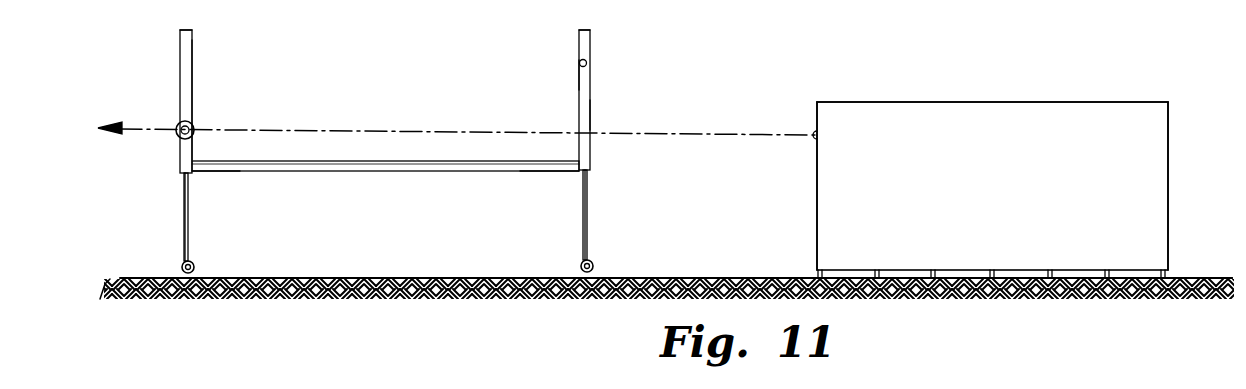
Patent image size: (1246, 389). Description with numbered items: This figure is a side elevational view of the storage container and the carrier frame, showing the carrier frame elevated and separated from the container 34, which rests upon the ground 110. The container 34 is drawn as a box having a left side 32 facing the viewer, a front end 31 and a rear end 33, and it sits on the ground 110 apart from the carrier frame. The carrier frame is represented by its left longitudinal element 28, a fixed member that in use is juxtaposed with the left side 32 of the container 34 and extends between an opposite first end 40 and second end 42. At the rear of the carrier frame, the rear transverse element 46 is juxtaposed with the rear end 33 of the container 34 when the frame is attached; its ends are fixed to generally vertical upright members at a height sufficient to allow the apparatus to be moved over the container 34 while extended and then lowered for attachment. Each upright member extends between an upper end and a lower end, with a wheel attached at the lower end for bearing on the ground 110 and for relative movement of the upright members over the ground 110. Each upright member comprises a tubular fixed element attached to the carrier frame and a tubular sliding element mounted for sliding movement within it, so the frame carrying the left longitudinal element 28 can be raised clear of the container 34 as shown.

The left longitudinal element 28 is at (326, 174).
The front end 31 is at (817, 213).
The left side 32 is at (962, 121).
The rear end 33 is at (1168, 225).
The container 34 is at (882, 102).
The first end 40 is at (203, 173).
The second end 42 is at (563, 173).
The rear transverse element 46 is at (580, 62).
The ground 110 is at (1190, 277).